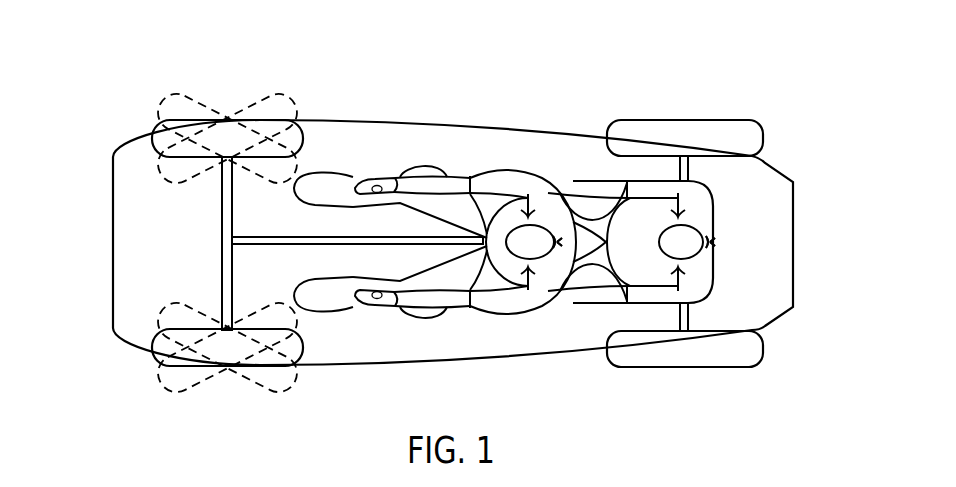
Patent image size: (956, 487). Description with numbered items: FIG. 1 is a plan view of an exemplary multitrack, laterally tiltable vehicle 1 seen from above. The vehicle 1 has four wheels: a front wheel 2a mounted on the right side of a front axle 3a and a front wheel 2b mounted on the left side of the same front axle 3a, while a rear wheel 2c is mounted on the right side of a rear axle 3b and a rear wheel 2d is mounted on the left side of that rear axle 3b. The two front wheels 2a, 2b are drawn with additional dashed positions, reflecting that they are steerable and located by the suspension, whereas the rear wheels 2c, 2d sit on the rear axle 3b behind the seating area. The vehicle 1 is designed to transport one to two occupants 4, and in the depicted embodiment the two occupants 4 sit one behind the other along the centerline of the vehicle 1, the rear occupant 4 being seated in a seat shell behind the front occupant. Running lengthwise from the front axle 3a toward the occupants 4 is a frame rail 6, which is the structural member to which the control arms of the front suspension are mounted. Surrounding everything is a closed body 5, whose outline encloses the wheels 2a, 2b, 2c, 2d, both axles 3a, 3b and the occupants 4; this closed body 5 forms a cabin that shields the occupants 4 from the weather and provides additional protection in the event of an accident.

The vehicle 1 is at (133, 55).
The front wheel 2a is at (233, 137).
The front wheel 2b is at (229, 351).
The rear wheel 2c is at (688, 130).
The rear wheel 2d is at (690, 352).
The front axle 3a is at (223, 243).
The rear axle 3b is at (691, 170).
The occupants 4 is at (704, 278).
The closed body 5 is at (795, 217).
The frame rail 6 is at (301, 237).